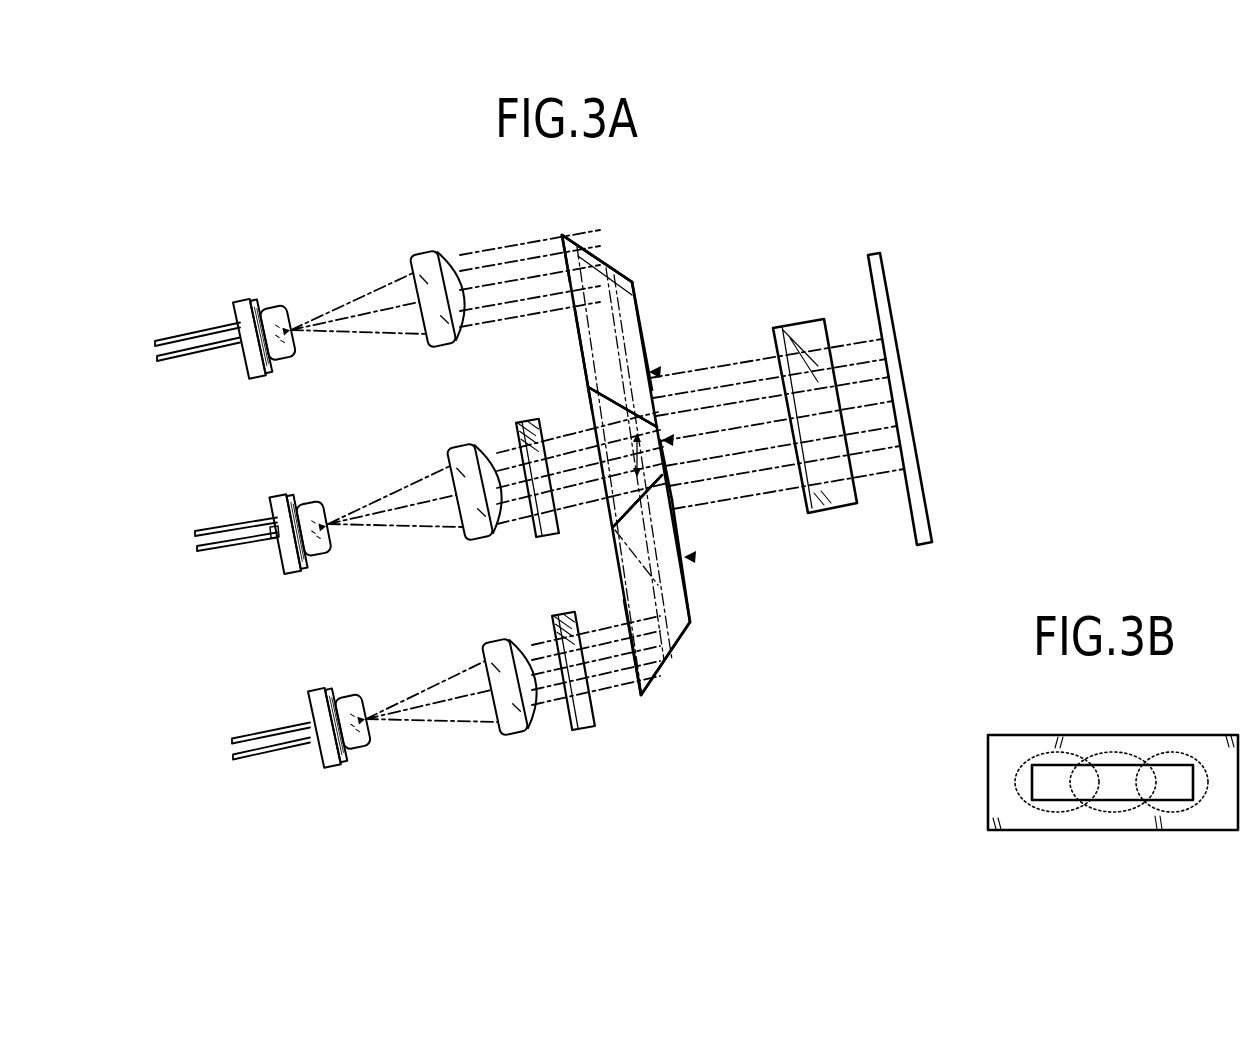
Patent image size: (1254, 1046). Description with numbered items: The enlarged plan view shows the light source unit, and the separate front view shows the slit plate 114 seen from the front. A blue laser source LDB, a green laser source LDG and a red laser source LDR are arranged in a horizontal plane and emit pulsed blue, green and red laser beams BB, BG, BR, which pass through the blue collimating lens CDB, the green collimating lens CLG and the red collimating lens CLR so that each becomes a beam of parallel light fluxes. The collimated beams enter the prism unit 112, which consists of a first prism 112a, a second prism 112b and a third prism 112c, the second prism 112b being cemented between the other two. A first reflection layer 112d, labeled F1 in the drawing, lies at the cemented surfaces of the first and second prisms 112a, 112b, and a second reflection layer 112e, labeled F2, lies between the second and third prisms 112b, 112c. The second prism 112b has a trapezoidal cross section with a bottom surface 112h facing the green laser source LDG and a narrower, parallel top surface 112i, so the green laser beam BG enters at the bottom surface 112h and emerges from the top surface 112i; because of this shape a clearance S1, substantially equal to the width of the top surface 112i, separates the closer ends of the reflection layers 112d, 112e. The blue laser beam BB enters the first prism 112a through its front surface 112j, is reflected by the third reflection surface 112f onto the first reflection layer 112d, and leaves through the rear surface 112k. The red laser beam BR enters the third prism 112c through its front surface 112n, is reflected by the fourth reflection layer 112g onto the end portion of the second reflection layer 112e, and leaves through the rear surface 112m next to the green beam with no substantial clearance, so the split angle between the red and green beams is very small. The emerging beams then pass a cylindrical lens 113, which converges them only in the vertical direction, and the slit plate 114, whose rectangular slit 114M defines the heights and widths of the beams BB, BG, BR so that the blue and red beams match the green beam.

In FIG. 3A, the prism unit 112 is at (685, 487).
In FIG. 3A, the first prism 112a is at (668, 441).
In FIG. 3A, the second prism 112b is at (655, 373).
In FIG. 3A, the third prism 112c is at (690, 556).
In FIG. 3A, the first reflection layer 112d is at (563, 390).
In FIG. 3A, the second reflection layer 112e is at (598, 537).
In FIG. 3A, the third reflection surface 112f is at (608, 266).
In FIG. 3A, the fourth reflection layer 112g is at (678, 648).
In FIG. 3A, the bottom surface 112h is at (585, 422).
In FIG. 3A, the top surface 112i is at (672, 480).
In FIG. 3A, the front surface 112j is at (556, 256).
In FIG. 3A, the rear surface 112k is at (642, 338).
In FIG. 3A, the rear surface 112m is at (690, 606).
In FIG. 3A, the front surface 112n is at (625, 685).
In FIG. 3A, the cylindrical lens 113 is at (800, 318).
In FIG. 3A, the slit plate 114 is at (890, 322).
In FIG. 3B, the slit plate 114 is at (1000, 779).
In FIG. 3B, the rectangular slit 114M is at (1110, 764).
In FIG. 3A, the first filter F1 is at (583, 393).
In FIG. 3A, the second filter F2 is at (613, 527).
In FIG. 3A, the clearance S1 is at (637, 474).
In FIG. 3A, the blue laser source LDB is at (243, 309).
In FIG. 3A, the green laser source LDG is at (278, 505).
In FIG. 3A, the red laser source LDR is at (316, 700).
In FIG. 3A, the blue collimator lens CDB is at (430, 338).
In FIG. 3A, the collimating lens CLG is at (465, 536).
In FIG. 3A, the collimating lens CLR is at (500, 730).
In FIG. 3A, the blue laser beam BB is at (330, 305).
In FIG. 3B, the blue laser beam BB is at (1040, 812).
In FIG. 3A, the green laser beam BG is at (368, 500).
In FIG. 3B, the green laser beam BG is at (1118, 814).
In FIG. 3A, the red laser beam BR is at (402, 694).
In FIG. 3B, the red laser beam BR is at (1193, 812).